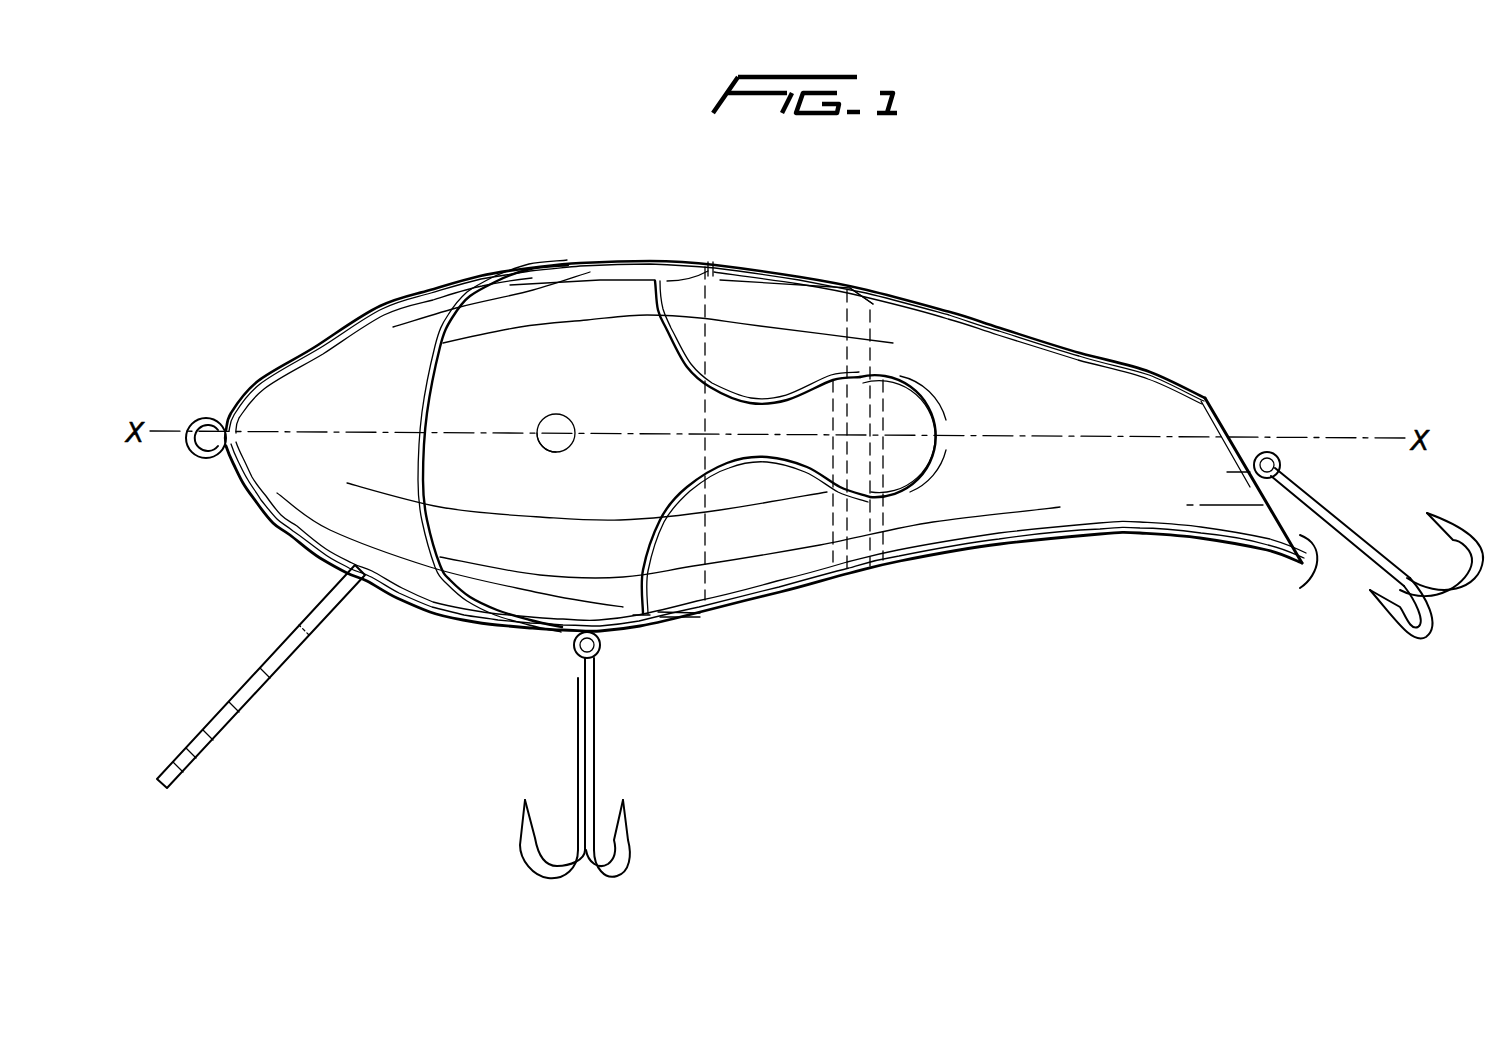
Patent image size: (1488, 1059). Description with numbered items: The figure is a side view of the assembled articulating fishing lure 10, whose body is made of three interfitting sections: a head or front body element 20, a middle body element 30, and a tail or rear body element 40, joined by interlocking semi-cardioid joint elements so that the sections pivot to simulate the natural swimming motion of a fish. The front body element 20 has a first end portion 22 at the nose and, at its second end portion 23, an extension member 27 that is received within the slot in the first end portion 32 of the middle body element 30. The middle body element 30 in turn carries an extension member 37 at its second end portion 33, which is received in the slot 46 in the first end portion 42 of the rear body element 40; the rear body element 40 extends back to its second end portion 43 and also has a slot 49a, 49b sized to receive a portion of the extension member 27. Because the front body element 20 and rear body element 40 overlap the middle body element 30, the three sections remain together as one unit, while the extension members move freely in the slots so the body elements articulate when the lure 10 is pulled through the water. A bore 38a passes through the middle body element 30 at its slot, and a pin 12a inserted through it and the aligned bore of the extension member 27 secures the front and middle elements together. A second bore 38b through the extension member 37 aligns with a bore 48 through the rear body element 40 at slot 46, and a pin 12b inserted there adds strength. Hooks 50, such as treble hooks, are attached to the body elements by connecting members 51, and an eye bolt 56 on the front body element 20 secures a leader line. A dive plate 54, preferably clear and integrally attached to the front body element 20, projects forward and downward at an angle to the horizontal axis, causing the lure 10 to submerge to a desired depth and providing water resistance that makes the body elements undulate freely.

The articulating fishing lure 10 is at (1055, 226).
The pin 12a is at (558, 440).
The pin 12b is at (857, 287).
The front body element 20 is at (320, 357).
The first end portion 22 is at (263, 475).
The second end portion 23 is at (690, 618).
The extension member 27 is at (665, 273).
The middle body element 30 is at (553, 287).
The first end portion 32 is at (447, 540).
The second end portion 33 is at (937, 467).
The extension member 37 is at (923, 413).
The bore 38a is at (540, 443).
The second bore 38b is at (880, 443).
The rear body element 40 is at (1087, 380).
The first end portion 42 is at (683, 543).
The second end portion 43 is at (1286, 573).
The slot 46 is at (923, 383).
The bore 48 is at (878, 305).
The slot 49a is at (710, 268).
The slot 49b is at (660, 617).
The hook 50 is at (1403, 623).
The connecting member 51 is at (1270, 453).
The dive plate 54 is at (250, 680).
The eye bolt 56 is at (197, 423).